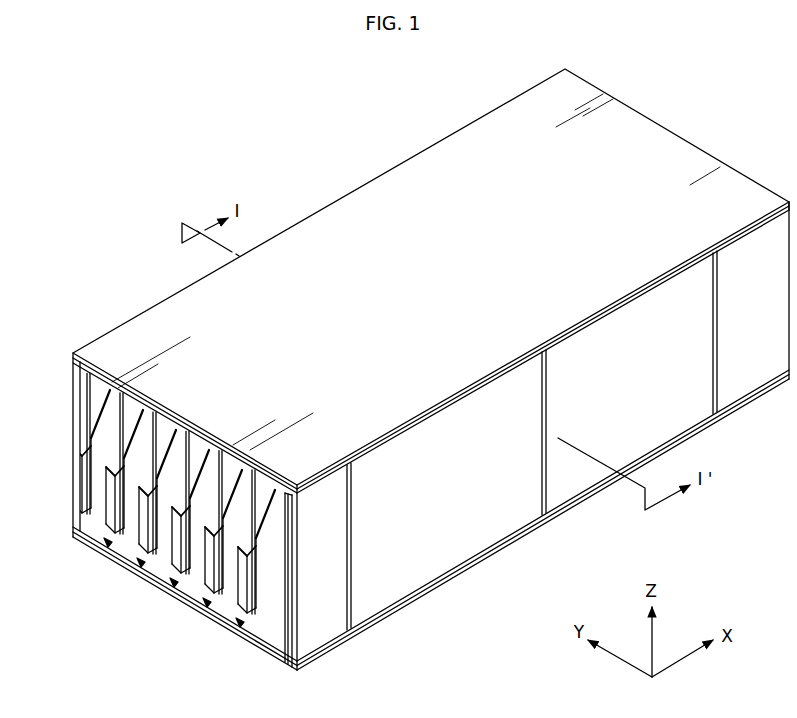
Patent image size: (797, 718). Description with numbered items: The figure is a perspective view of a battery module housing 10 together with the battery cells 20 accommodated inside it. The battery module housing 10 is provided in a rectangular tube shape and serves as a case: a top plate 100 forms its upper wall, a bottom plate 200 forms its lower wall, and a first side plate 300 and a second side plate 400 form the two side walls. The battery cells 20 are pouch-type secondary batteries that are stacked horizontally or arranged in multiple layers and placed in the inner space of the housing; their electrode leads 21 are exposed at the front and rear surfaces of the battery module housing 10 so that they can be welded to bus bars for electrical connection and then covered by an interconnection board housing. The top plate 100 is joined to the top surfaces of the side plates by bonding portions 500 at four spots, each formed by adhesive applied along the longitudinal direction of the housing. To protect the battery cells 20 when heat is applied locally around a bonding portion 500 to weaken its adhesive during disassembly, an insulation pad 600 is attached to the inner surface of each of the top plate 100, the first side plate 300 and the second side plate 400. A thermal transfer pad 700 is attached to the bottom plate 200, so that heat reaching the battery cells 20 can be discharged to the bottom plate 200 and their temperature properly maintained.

The battery module housing 10 is at (269, 152).
The top plate 100 is at (407, 187).
The bottom plate 200 is at (207, 620).
The first side plate 300 is at (416, 553).
The second side plate 400 is at (73, 405).
The bonding portion 500 is at (73, 356).
The insulation pad 600 is at (98, 373).
The thermal transfer pad 700 is at (183, 583).
The battery cell 20 is at (132, 546).
The electrode lead 21 is at (113, 508).